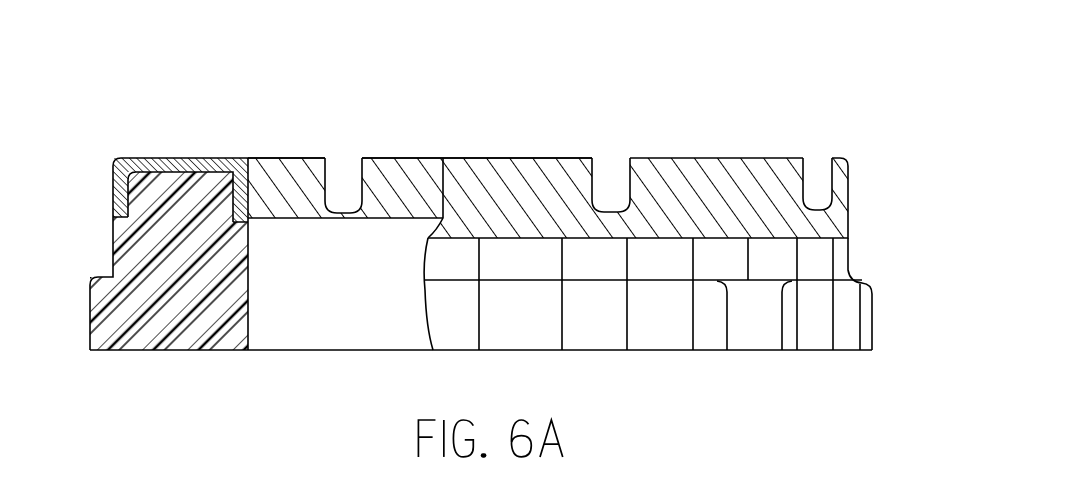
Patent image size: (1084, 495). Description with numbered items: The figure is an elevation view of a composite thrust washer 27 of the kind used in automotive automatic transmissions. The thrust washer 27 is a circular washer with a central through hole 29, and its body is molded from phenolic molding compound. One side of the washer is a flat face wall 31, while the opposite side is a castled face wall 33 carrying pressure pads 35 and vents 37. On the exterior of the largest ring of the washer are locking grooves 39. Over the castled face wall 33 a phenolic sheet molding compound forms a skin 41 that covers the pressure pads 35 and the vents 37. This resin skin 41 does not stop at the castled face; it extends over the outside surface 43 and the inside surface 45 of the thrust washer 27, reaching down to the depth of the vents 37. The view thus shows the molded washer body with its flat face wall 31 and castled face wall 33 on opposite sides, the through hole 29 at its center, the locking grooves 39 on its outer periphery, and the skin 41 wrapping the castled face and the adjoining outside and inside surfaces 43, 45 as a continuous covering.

The thrust washer 27 is at (538, 143).
The central through hole 29 is at (327, 327).
The flat face wall 31 is at (648, 349).
The castled face wall 33 is at (407, 158).
The pressure pads 35 is at (265, 157).
The vents 37 is at (341, 185).
The locking grooves 39 is at (755, 342).
The skin 41 is at (433, 158).
The outside surface 43 is at (787, 190).
The inside surface 45 is at (296, 157).